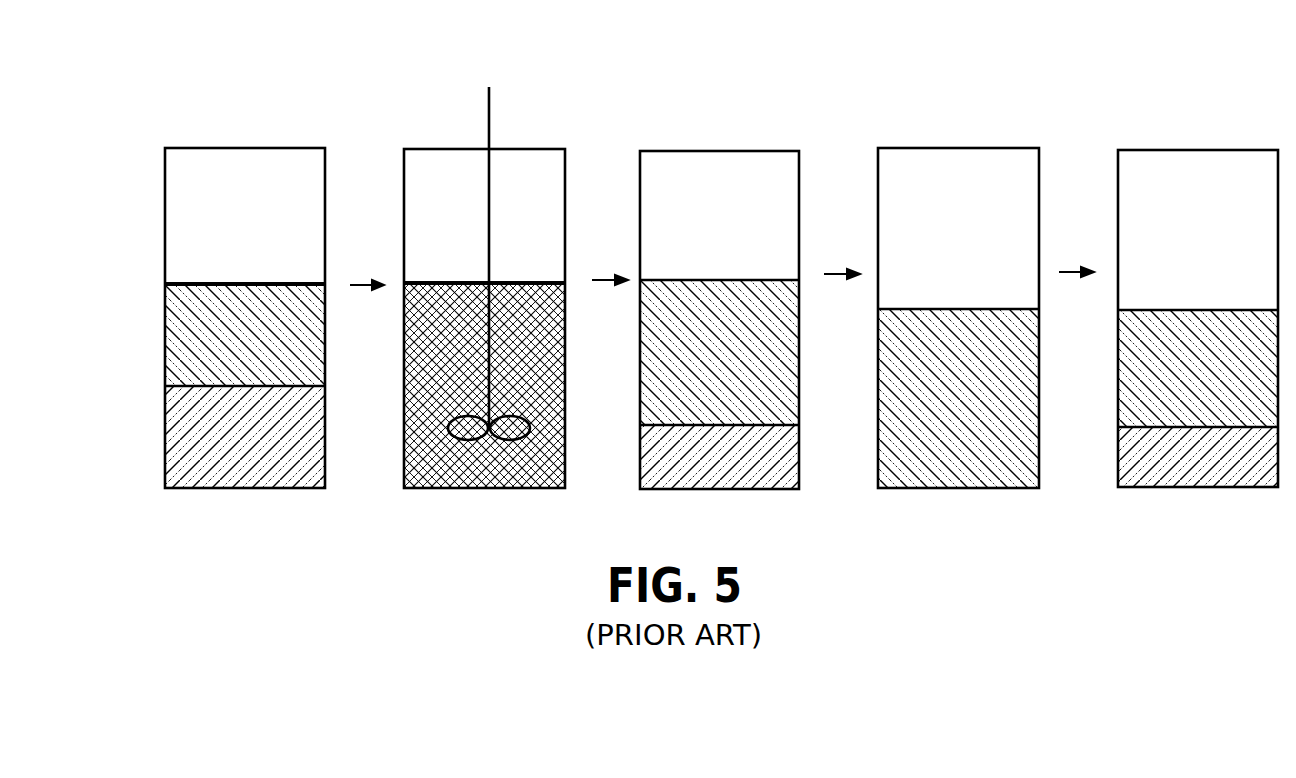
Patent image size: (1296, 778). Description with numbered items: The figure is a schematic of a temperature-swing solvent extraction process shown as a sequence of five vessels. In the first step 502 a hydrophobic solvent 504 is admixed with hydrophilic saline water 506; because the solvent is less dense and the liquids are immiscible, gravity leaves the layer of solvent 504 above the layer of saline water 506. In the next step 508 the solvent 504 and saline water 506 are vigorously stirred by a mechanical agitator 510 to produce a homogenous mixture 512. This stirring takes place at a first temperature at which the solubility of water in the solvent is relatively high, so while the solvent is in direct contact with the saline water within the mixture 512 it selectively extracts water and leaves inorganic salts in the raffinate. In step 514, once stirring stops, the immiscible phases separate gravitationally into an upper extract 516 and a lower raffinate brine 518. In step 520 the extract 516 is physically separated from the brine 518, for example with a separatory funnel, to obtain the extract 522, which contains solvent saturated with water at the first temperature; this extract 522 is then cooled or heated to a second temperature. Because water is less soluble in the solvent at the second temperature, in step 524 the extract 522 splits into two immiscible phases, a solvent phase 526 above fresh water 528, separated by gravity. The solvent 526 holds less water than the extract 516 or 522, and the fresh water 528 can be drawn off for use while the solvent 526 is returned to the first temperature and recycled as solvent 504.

The admixing step 502 is at (228, 148).
The hydrophobic solvent 504 is at (172, 335).
The saline water 506 is at (178, 435).
The stirring step 508 is at (431, 148).
The mechanical agitator 510 is at (490, 109).
The homogenous mixture 512 is at (416, 411).
The gravitational separation step 514 is at (740, 150).
The extract 516 is at (657, 384).
The raffinate brine 518 is at (639, 466).
The extract separation step 520 is at (976, 148).
The extract 522 is at (888, 402).
The phase splitting step 524 is at (1201, 150).
The solvent phase 526 is at (1137, 385).
The fresh water 528 is at (1118, 457).